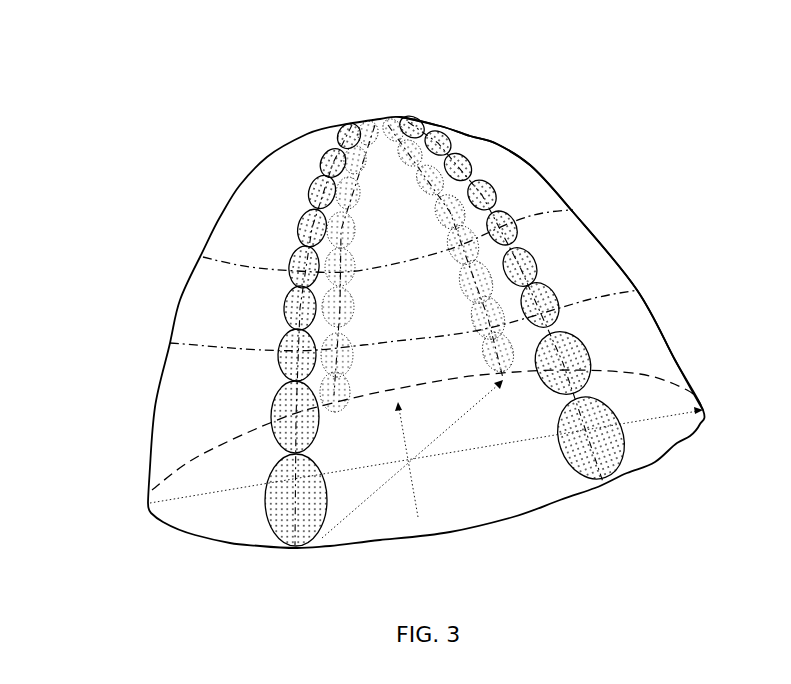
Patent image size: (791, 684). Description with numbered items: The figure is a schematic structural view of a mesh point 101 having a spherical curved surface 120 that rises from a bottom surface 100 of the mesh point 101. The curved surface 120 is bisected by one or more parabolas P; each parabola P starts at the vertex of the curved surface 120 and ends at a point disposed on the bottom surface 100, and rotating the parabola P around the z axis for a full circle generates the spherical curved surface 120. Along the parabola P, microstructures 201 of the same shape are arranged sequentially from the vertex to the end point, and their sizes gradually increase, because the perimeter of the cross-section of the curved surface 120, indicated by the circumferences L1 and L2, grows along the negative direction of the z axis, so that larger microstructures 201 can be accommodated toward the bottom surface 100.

The mesh point 101 is at (343, 35).
The curved surface 120 is at (493, 167).
The circumference of cross-section of spherical curved surface L1 is at (555, 204).
The circumference of cross-section of spherical curved surface L2 is at (627, 283).
The bottom surface of mesh point 100 is at (492, 477).
The microstructure 201 is at (308, 230).
The parabola P is at (297, 497).